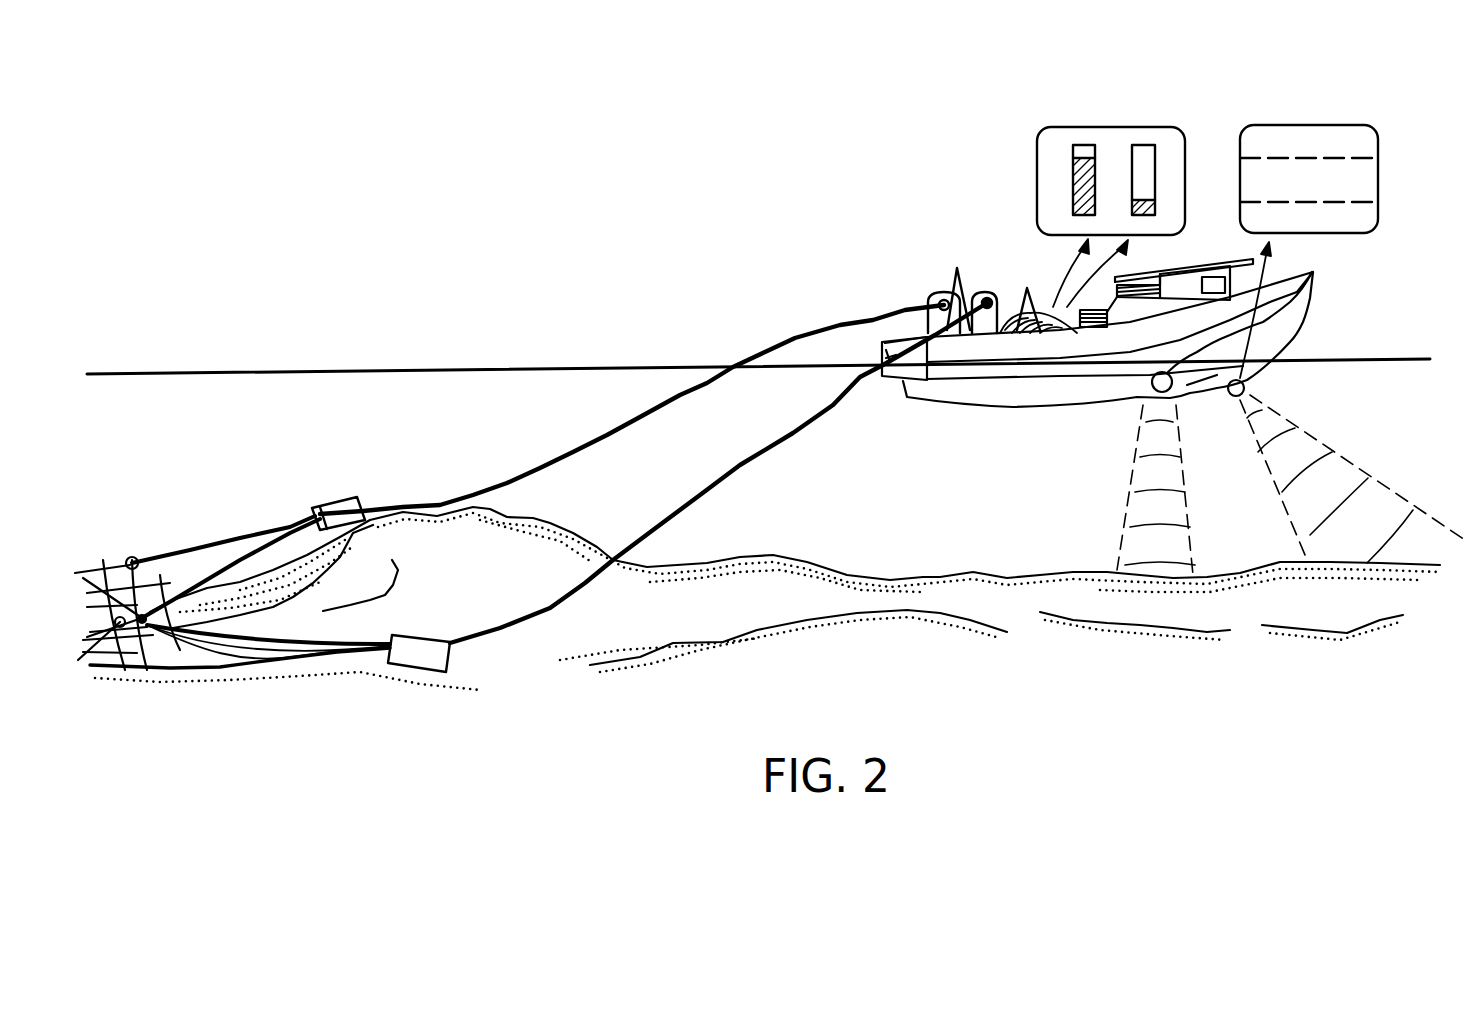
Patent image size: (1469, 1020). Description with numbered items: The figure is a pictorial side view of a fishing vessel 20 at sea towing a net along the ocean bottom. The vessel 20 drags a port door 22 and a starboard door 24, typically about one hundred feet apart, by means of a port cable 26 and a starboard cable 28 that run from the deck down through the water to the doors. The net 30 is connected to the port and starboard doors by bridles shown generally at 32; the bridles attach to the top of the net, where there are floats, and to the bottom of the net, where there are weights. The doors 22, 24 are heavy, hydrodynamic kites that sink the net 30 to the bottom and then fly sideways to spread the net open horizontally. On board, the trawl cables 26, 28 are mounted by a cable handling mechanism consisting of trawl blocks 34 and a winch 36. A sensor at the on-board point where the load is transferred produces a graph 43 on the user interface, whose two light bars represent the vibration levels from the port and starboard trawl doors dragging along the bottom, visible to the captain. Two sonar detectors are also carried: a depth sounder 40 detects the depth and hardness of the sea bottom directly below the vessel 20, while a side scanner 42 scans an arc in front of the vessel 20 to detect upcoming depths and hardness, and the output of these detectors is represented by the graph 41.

The fishing vessel 20 is at (1313, 300).
The port door 22 is at (344, 500).
The starboard door 24 is at (422, 673).
The port cable 26 is at (795, 337).
The starboard cable 28 is at (793, 433).
The net 30 is at (142, 622).
The bridles 32 is at (219, 568).
The trawl blocks 34 is at (984, 286).
The winch 36 is at (1038, 296).
The depth sounder 40 is at (1150, 385).
The graph 41 is at (1298, 125).
The side scanner 42 is at (1245, 382).
The graph 43 is at (1117, 127).